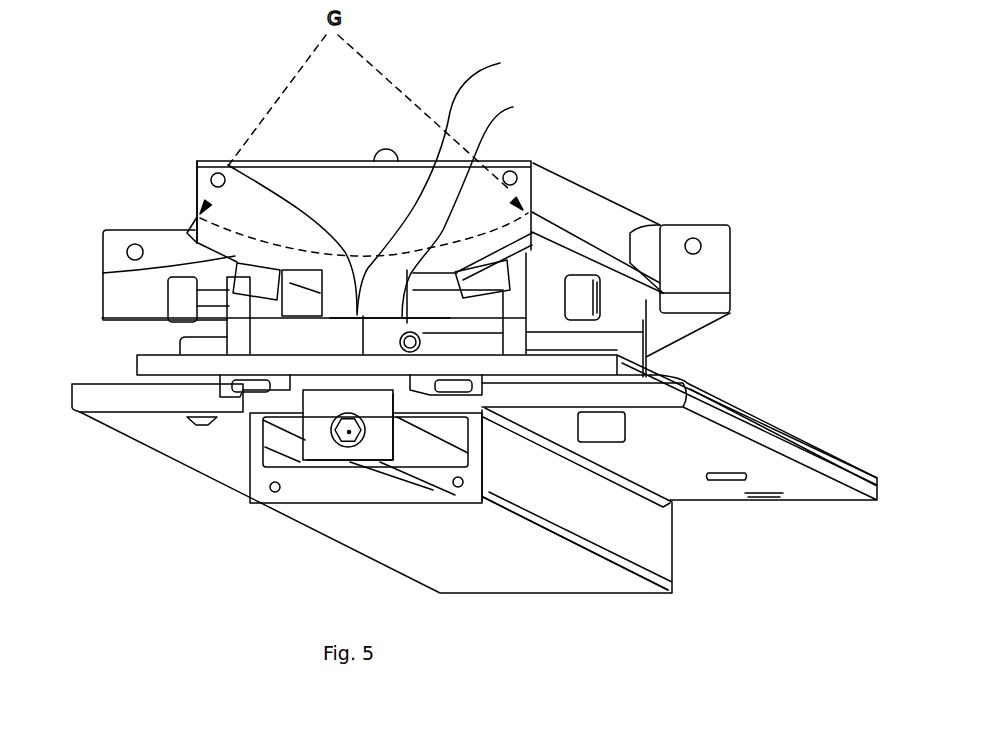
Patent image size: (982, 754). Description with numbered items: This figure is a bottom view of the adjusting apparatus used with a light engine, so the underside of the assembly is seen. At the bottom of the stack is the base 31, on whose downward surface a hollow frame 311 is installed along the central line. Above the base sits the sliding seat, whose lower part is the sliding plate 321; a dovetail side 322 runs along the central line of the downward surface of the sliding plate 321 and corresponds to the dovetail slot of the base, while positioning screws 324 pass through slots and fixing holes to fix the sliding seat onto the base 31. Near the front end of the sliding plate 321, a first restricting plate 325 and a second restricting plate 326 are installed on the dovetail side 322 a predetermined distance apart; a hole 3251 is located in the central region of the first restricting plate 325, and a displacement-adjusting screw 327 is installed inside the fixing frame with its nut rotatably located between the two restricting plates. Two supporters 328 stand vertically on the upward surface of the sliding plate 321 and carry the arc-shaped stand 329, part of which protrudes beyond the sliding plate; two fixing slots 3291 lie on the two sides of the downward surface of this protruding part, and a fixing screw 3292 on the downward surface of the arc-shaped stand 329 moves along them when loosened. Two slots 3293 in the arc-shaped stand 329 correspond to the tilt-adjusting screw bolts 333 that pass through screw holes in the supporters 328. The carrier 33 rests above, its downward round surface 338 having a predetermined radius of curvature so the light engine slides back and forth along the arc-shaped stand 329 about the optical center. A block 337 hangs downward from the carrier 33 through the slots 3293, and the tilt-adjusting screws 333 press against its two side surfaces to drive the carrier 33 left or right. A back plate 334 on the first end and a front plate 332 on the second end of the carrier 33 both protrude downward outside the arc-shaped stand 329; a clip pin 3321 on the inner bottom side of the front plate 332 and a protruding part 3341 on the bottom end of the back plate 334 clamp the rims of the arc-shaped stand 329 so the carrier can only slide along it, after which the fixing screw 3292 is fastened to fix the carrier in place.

The base 31 is at (793, 483).
The hollow frame 311 is at (637, 535).
The sliding plate 321 is at (630, 378).
The dovetail side 322 is at (300, 390).
The positioning screw 324 is at (180, 343).
The first restricting plate 325 is at (255, 415).
The hole 3251 is at (355, 437).
The second restricting plate 326 is at (417, 430).
The displacement-adjusting screw 327 is at (540, 487).
The supporter 328 is at (237, 337).
The arc-shaped stand 329 is at (630, 235).
The fixing slot 3291 is at (597, 278).
The fixing screw 3292 is at (540, 240).
The slot 3293 is at (479, 206).
The carrier 33 is at (500, 161).
The front plate 332 is at (160, 240).
The clip pin 3321 is at (646, 345).
The tilt-adjusting screw bolt 333 is at (602, 293).
The back plate 334 is at (195, 182).
The protruding part 3341 is at (238, 168).
The block 337 is at (237, 318).
The round surface 338 is at (431, 185).